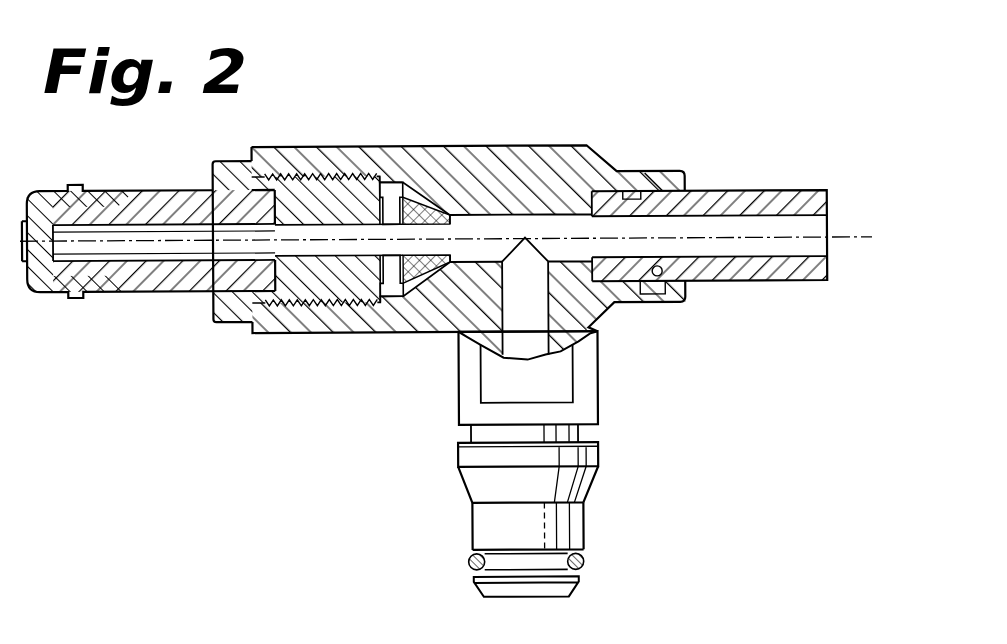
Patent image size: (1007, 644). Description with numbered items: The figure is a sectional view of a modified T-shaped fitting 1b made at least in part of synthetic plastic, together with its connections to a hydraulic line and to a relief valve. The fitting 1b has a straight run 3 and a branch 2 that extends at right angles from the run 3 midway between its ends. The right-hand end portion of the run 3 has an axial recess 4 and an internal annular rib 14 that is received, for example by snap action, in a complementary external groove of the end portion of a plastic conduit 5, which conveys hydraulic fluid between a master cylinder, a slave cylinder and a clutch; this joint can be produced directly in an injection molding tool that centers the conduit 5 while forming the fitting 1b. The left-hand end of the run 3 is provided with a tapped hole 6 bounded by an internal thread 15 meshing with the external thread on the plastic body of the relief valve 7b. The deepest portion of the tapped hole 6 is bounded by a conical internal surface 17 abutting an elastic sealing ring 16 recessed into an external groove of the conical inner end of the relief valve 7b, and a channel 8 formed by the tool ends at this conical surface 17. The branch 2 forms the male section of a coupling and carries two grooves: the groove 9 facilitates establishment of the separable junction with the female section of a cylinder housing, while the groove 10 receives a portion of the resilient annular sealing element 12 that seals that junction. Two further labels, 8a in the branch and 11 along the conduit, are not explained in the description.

The fitting 1b is at (451, 132).
The branch 2 is at (614, 455).
The run 3 is at (233, 162).
The axial recess 4 is at (658, 278).
The conduit 5 is at (798, 192).
The tapped hole 6 is at (331, 306).
The relief valve 7b is at (192, 311).
The channel 8 is at (555, 227).
The branch bore 8a is at (542, 327).
The groove 9 is at (580, 433).
The groove 10 is at (548, 548).
The axis 11 is at (737, 237).
The sealing element 12 is at (582, 569).
The internal annular rib 14 is at (630, 200).
The internal thread 15 is at (297, 306).
The elastic sealing ring 16 is at (413, 312).
The conical internal surface 17 is at (427, 190).